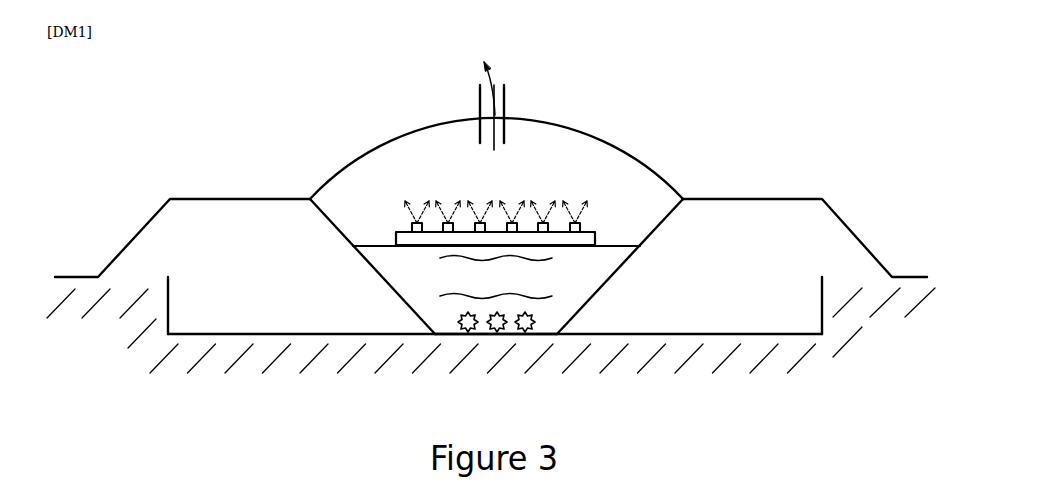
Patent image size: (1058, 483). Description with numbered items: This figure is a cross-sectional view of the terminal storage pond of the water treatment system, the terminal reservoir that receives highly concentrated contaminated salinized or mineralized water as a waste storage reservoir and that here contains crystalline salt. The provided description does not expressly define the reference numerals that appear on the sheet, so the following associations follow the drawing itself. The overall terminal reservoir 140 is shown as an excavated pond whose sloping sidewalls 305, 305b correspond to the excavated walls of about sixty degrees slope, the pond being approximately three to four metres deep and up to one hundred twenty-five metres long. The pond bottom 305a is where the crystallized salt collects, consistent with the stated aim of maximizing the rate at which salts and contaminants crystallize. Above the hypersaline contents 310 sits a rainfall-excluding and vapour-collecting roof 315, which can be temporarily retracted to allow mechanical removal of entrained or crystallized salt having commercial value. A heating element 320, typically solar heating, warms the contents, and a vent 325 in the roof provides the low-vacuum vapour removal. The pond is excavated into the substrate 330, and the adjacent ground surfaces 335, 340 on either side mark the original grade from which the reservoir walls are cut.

The micro-hotplate chamber device 140 is at (660, 90).
The cavity sidewall 305 is at (377, 273).
The cavity bottom 305a is at (542, 315).
The cavity sidewall 305b is at (608, 262).
The chamber interior 310 is at (378, 225).
The dome lid 315 is at (337, 145).
The heater 320 is at (543, 172).
The vent opening 325 is at (468, 80).
The substrate 330 is at (487, 345).
The substrate surface 335 is at (802, 180).
The substrate surface 340 is at (78, 255).